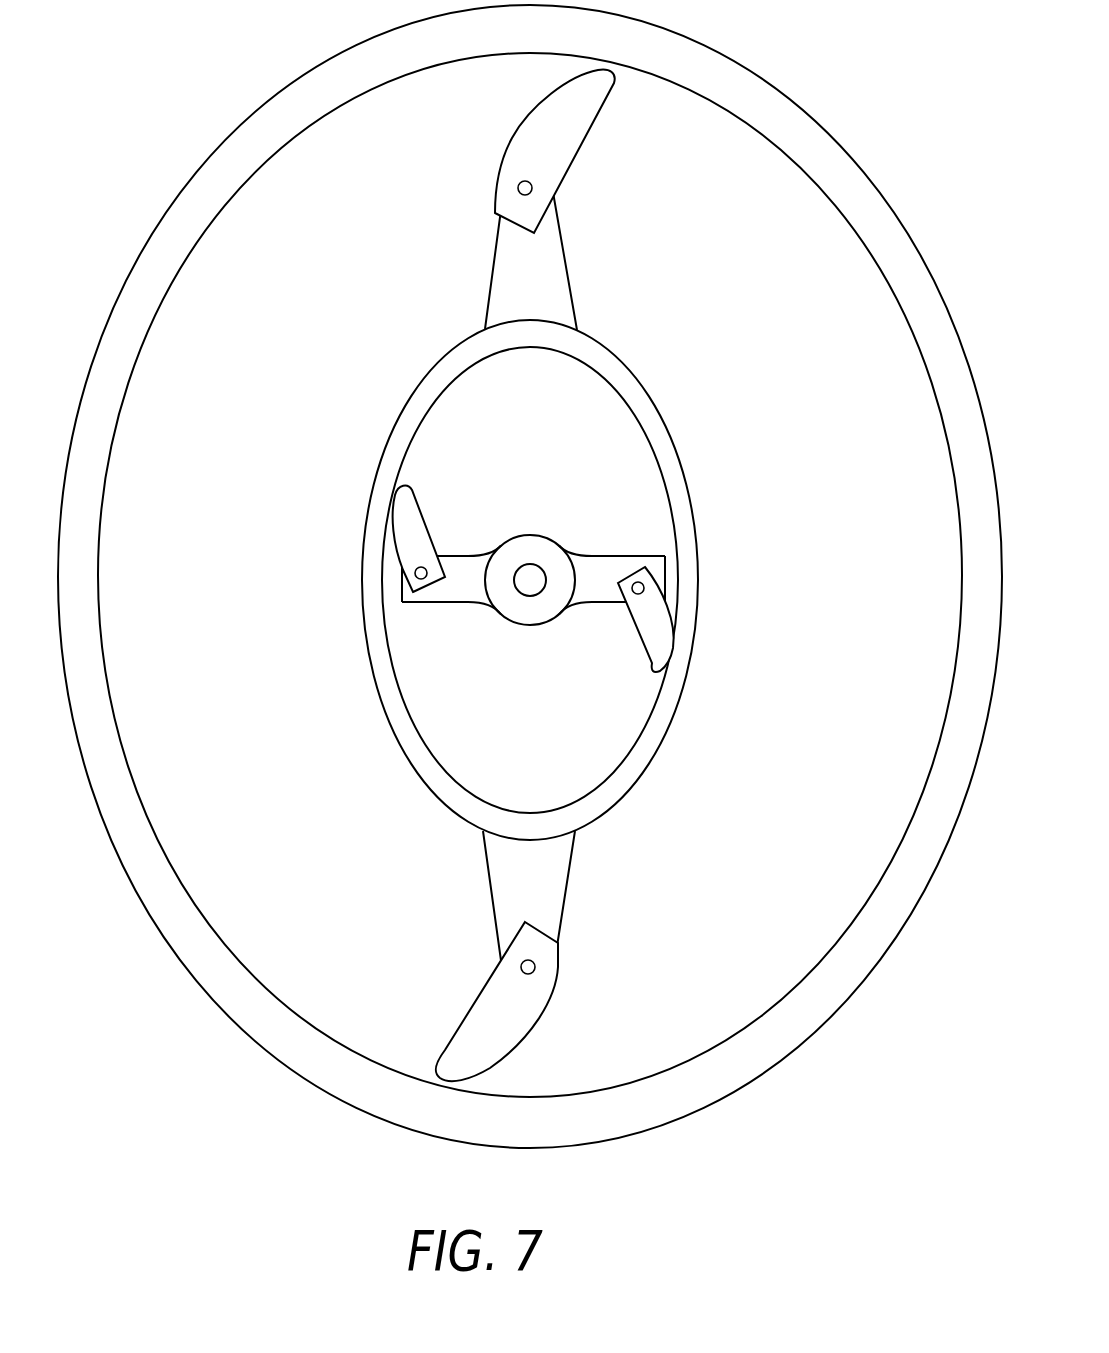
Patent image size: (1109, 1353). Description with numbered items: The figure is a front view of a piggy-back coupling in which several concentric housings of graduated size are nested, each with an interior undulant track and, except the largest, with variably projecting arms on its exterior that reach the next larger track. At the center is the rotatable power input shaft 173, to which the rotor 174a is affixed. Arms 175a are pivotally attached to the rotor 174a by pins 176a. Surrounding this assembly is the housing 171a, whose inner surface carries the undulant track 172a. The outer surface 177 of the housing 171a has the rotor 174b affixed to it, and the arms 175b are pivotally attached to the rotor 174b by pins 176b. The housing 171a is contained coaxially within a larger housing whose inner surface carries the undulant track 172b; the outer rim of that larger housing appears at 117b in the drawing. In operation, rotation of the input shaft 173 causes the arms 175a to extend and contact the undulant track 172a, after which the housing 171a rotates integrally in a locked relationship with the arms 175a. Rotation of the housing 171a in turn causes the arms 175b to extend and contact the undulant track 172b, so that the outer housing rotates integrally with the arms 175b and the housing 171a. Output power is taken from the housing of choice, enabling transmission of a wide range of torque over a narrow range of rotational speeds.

The outer rim 117b is at (763, 1072).
The undulant track 172b is at (935, 763).
The housing 171a is at (675, 455).
The undulant track 172a is at (648, 725).
The outer surface 177 is at (562, 580).
The rotatable power input shaft 173 is at (529, 575).
The rotor 174a is at (458, 595).
The rotor 174b is at (558, 270).
The arms 175a is at (407, 498).
The arms 175b is at (590, 115).
The pins 176a is at (423, 567).
The pins 176b is at (533, 187).